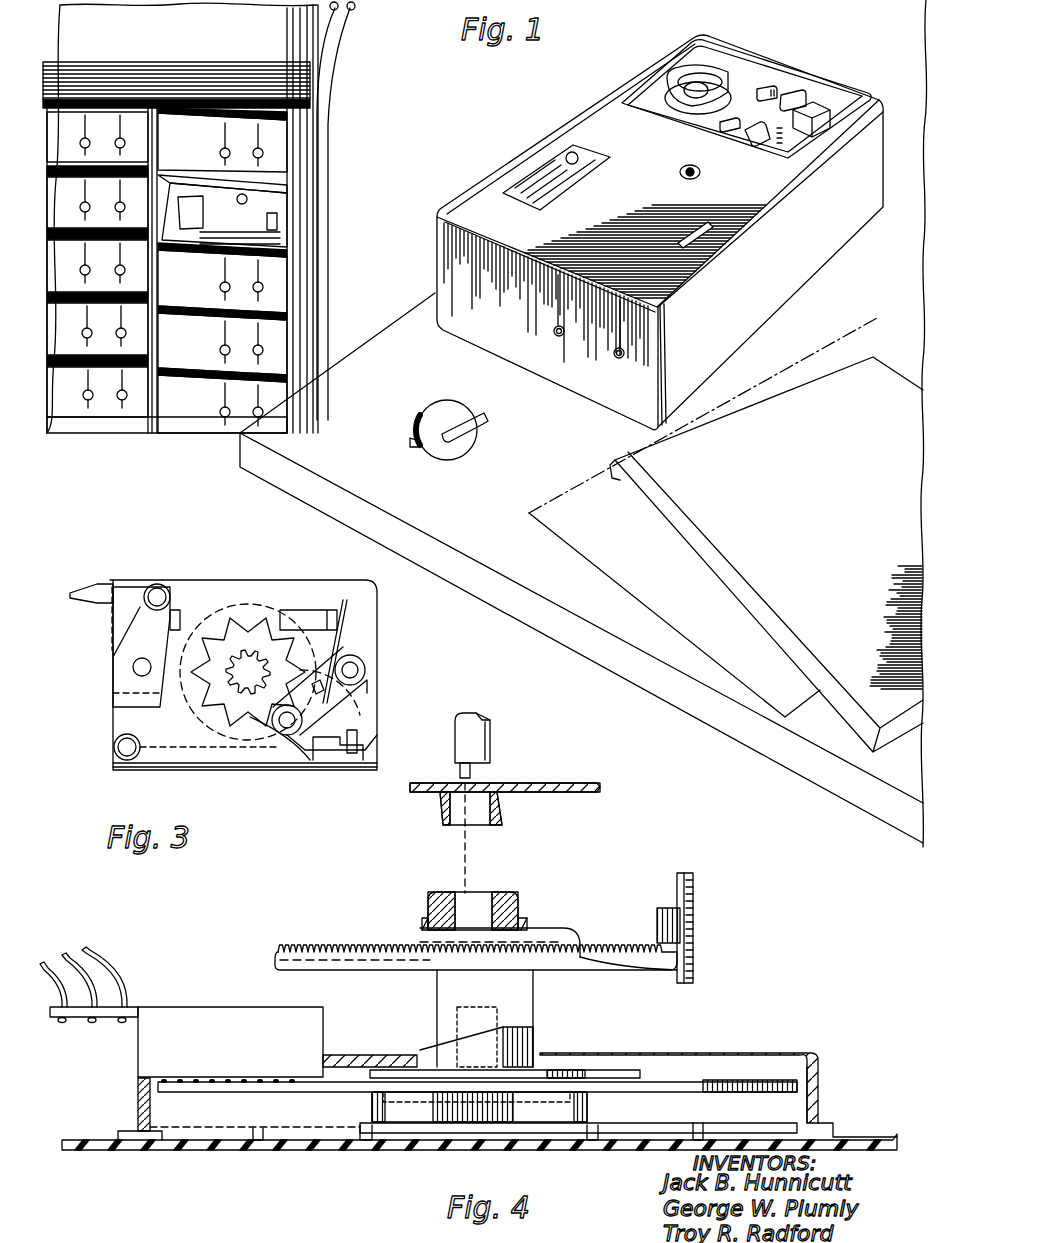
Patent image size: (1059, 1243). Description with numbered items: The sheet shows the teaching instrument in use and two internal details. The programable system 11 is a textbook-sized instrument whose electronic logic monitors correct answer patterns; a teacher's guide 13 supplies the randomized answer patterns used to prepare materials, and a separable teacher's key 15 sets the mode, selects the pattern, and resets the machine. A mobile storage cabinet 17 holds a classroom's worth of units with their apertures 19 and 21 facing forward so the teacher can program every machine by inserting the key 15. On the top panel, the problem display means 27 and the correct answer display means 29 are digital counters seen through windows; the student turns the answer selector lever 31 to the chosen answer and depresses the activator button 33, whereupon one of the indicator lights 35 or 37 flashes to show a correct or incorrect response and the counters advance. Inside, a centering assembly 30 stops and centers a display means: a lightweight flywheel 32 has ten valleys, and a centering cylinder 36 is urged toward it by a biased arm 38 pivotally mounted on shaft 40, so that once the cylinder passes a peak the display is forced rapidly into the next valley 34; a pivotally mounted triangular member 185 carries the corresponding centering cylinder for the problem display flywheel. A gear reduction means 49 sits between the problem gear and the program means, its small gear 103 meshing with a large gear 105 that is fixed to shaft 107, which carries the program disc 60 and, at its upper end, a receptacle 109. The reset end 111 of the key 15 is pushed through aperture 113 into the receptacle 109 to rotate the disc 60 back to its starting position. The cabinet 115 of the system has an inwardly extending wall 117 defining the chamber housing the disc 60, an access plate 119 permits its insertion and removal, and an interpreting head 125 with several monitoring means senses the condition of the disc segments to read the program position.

In FIG. 1, the programable system 11 is at (568, 137).
In FIG. 1, the teacher's guide 13 is at (645, 456).
In FIG. 1, the separable teacher's key 15 is at (418, 430).
In FIG. 1, the mobile storage cabinet 17 is at (277, 73).
In FIG. 1, the aperture 19 is at (228, 152).
In FIG. 1, the aperture 21 is at (262, 155).
In FIG. 1, the problem display means 27 is at (747, 143).
In FIG. 1, the correct answer display means 29 is at (800, 97).
In FIG. 1, the answer selector lever 31 is at (683, 74).
In FIG. 1, the activator button 33 is at (820, 106).
In FIG. 1, the indicator light 35 is at (720, 125).
In FIG. 1, the indicator light 37 is at (768, 88).
In FIG. 3, the centering assembly 30 is at (203, 557).
In FIG. 3, the flywheel 32 is at (253, 637).
In FIG. 3, the valley 34 is at (250, 717).
In FIG. 3, the centering cylinder 36 is at (280, 733).
In FIG. 3, the biased arm 38 is at (367, 693).
In FIG. 3, the shaft 40 is at (357, 653).
In FIG. 3, the triangular member 185 is at (357, 723).
In FIG. 4, the gear reduction means 49 is at (604, 910).
In FIG. 4, the program disc 60 is at (763, 1093).
In FIG. 4, the small gear 103 is at (657, 920).
In FIG. 4, the large gear 105 is at (633, 973).
In FIG. 4, the shaft 107 is at (507, 1047).
In FIG. 4, the receptacle 109 is at (478, 903).
In FIG. 1, the reset end 111 is at (486, 419).
In FIG. 4, the reset end 111 is at (472, 772).
In FIG. 1, the aperture 113 is at (682, 172).
In FIG. 4, the aperture 113 is at (497, 783).
In FIG. 4, the cabinet 115 is at (103, 1150).
In FIG. 4, the inwardly extending wall 117 is at (800, 1052).
In FIG. 4, the access plate 119 is at (197, 1150).
In FIG. 4, the interpreting head 125 is at (243, 1007).